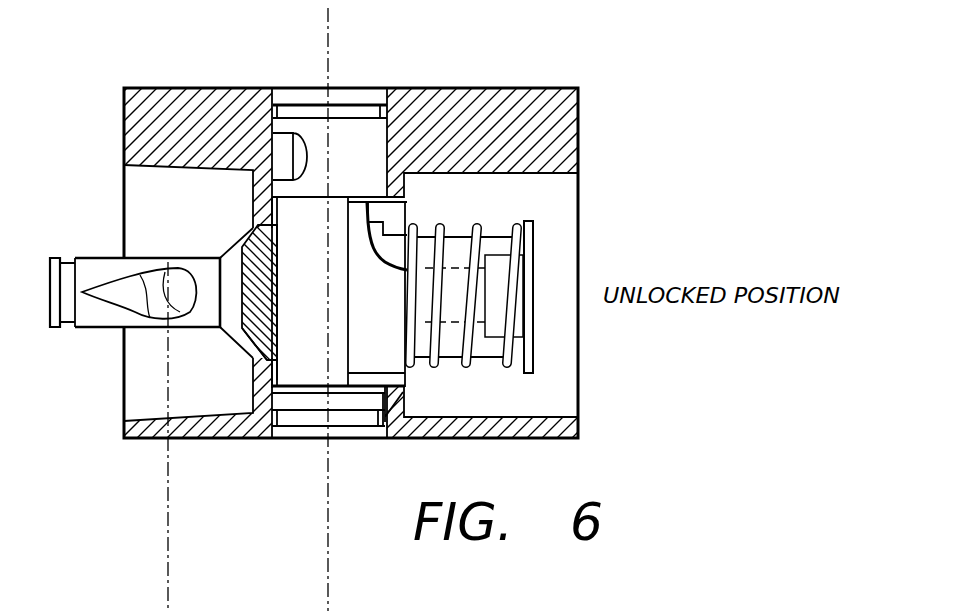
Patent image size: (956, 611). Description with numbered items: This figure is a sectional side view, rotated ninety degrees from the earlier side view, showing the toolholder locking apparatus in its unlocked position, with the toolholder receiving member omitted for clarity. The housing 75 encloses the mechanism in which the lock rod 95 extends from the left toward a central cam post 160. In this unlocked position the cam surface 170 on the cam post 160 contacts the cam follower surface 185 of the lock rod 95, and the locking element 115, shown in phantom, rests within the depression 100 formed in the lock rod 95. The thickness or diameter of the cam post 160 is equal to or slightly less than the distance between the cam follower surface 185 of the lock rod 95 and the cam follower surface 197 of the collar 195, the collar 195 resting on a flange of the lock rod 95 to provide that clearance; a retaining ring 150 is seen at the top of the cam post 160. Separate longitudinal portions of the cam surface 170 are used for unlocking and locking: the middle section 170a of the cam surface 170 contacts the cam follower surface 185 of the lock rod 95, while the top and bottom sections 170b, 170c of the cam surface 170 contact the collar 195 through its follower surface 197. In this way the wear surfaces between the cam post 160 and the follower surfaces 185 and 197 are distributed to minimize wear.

The housing 75 is at (576, 138).
The lock rod 95 is at (181, 254).
The depression 100 is at (125, 278).
The locking element 115 is at (150, 305).
The retaining ring 150 is at (342, 90).
The cam post 160 is at (335, 284).
The cam surface 170 is at (317, 222).
The middle section of the cam surface 170a is at (250, 303).
The top section of the cam surface 170b is at (390, 213).
The bottom section of the cam surface 170c is at (355, 375).
The cam follower surface of the lock rod 185 is at (278, 287).
The collar 195 is at (377, 281).
The cam follower surface of the collar 197 is at (338, 370).